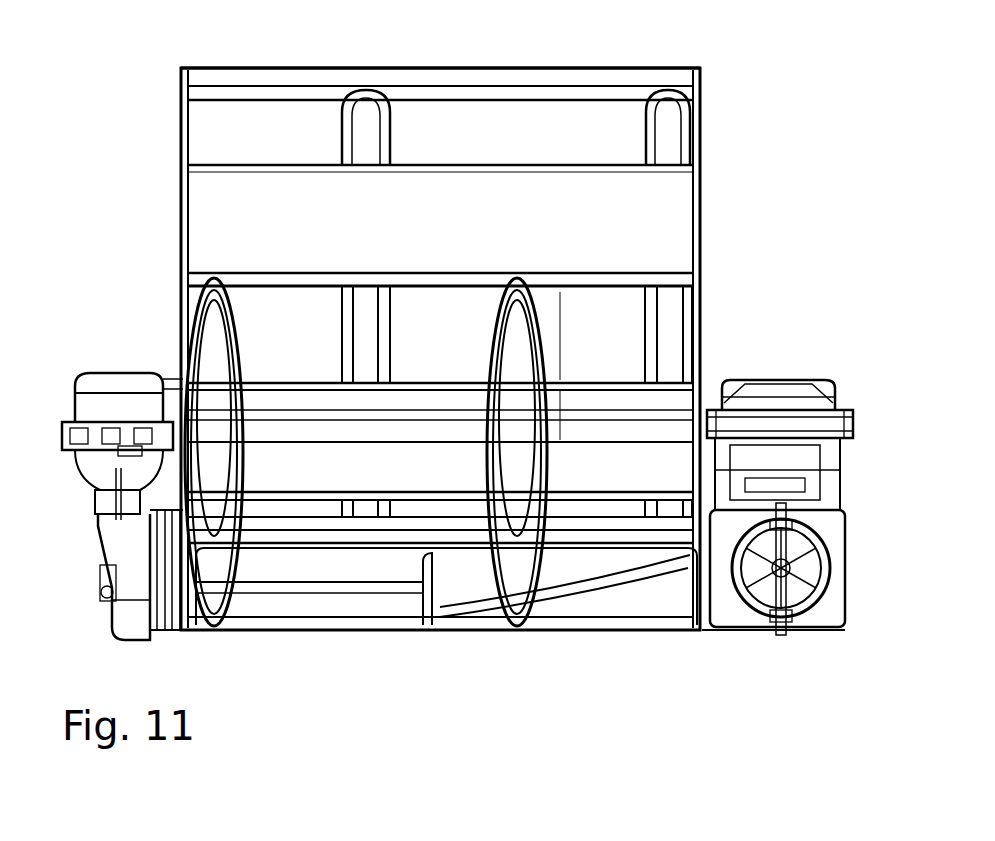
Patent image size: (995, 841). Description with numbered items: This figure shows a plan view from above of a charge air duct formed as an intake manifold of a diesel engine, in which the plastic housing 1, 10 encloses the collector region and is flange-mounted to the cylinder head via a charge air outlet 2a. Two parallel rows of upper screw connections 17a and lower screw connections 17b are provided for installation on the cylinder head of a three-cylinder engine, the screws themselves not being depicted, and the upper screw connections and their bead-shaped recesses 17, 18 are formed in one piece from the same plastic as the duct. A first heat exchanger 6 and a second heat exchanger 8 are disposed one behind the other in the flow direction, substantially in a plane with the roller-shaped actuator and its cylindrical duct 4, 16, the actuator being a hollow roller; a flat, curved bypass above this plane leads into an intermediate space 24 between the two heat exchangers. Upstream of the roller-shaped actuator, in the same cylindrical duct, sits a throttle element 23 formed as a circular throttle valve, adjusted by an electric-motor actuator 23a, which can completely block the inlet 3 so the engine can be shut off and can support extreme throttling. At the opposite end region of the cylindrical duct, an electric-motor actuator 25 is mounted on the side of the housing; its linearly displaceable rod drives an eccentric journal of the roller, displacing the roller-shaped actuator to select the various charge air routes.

The laundry treatment appliance / drum 1, 10 is at (440, 34).
The charge air outlet 2a is at (272, 62).
The lower screw connections 17b is at (362, 108).
The support rings / struts 17, 18 is at (215, 340).
The second heat exchanger 8 is at (655, 215).
The intermediate space 24 is at (617, 328).
The first heat exchanger 6 is at (640, 392).
The electric-motor actuator 23a is at (791, 410).
The electric-motor actuator 25 is at (100, 361).
The upper screw connections 17a is at (515, 340).
The inlet 3 is at (850, 543).
The throttle element 23 is at (805, 598).
The tub bottom / drain channel 4, 16 is at (412, 600).